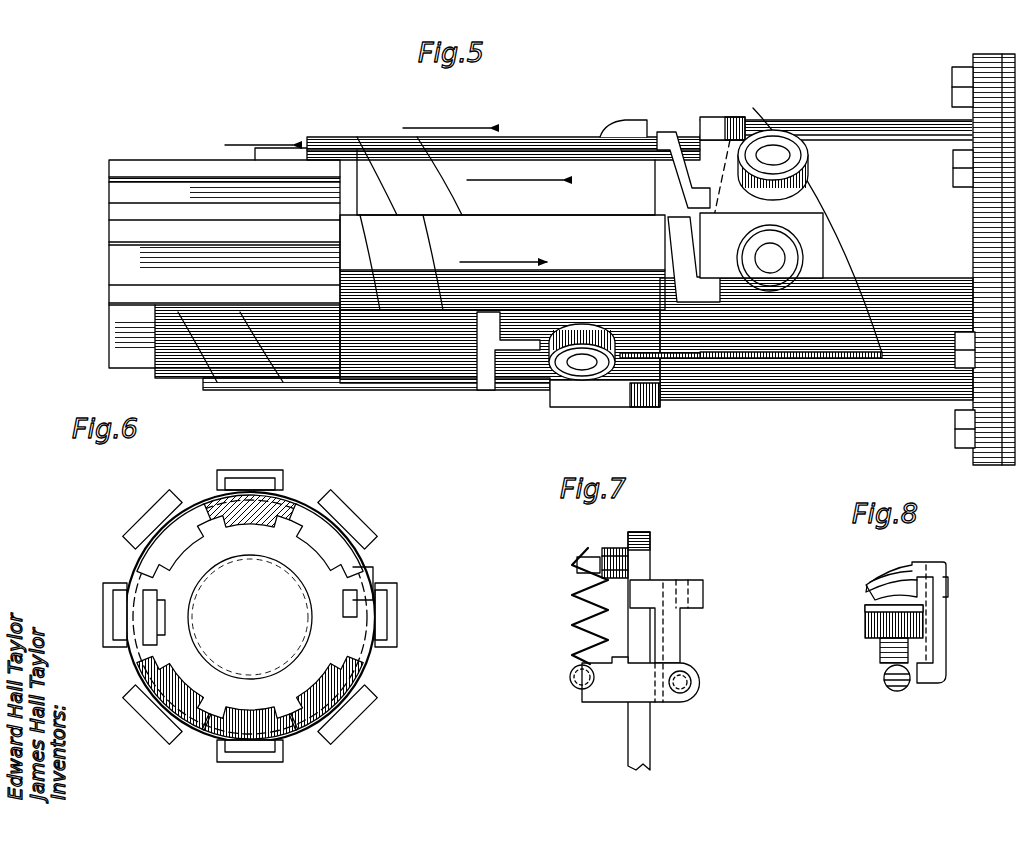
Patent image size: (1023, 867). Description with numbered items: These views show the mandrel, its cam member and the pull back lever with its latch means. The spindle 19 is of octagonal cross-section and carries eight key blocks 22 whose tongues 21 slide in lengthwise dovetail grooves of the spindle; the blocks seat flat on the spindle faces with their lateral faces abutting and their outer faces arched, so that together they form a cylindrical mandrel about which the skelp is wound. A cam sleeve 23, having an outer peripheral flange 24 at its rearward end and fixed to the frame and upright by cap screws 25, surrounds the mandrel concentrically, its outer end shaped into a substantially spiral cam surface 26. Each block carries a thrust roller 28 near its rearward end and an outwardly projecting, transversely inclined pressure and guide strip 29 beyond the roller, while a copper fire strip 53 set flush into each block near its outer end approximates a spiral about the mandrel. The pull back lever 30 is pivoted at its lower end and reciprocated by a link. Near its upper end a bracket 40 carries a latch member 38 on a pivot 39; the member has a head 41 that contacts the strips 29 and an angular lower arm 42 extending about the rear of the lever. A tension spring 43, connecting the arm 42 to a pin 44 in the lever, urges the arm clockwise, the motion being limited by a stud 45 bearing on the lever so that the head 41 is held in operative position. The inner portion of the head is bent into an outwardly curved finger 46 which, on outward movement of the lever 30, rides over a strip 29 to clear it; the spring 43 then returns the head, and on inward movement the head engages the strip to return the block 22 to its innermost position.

In FIG. 5, the spindle 19 is at (130, 163).
In FIG. 6, the spindle 19 is at (207, 550).
In FIG. 6, the tongues 21 is at (337, 540).
In FIG. 5, the key blocks 22 is at (552, 222).
In FIG. 6, the key blocks 22 is at (217, 497).
In FIG. 5, the cam sleeve 23 is at (860, 127).
In FIG. 5, the outer peripheral flange 24 is at (985, 55).
In FIG. 5, the cap screws 25 is at (957, 153).
In FIG. 5, the cam surface 26 is at (833, 227).
In FIG. 5, the thrust roller 28 is at (785, 145).
In FIG. 6, the thrust roller 28 is at (343, 493).
In FIG. 5, the pressure and guide strip 29 is at (665, 135).
In FIG. 6, the pressure and guide strip 29 is at (140, 573).
In FIG. 7, the pull back lever 30 is at (647, 752).
In FIG. 7, the latch member 38 is at (682, 638).
In FIG. 8, the latch member 38 is at (945, 642).
In FIG. 7, the pivot 39 is at (693, 681).
In FIG. 8, the bracket 40 is at (922, 607).
In FIG. 7, the head 41 is at (663, 587).
In FIG. 7, the lower arm 42 is at (660, 703).
In FIG. 8, the lower arm 42 is at (925, 678).
In FIG. 7, the tension spring 43 is at (573, 627).
In FIG. 8, the tension spring 43 is at (900, 690).
In FIG. 7, the pin 44 is at (577, 561).
In FIG. 8, the pin 44 is at (888, 683).
In FIG. 7, the stud 45 is at (622, 665).
In FIG. 8, the stud 45 is at (935, 645).
In FIG. 8, the finger 46 is at (897, 573).
In FIG. 5, the fire strip 53 is at (397, 137).